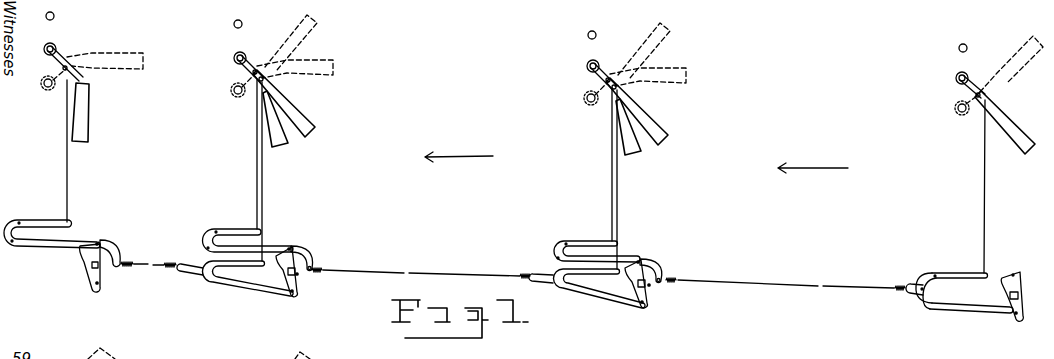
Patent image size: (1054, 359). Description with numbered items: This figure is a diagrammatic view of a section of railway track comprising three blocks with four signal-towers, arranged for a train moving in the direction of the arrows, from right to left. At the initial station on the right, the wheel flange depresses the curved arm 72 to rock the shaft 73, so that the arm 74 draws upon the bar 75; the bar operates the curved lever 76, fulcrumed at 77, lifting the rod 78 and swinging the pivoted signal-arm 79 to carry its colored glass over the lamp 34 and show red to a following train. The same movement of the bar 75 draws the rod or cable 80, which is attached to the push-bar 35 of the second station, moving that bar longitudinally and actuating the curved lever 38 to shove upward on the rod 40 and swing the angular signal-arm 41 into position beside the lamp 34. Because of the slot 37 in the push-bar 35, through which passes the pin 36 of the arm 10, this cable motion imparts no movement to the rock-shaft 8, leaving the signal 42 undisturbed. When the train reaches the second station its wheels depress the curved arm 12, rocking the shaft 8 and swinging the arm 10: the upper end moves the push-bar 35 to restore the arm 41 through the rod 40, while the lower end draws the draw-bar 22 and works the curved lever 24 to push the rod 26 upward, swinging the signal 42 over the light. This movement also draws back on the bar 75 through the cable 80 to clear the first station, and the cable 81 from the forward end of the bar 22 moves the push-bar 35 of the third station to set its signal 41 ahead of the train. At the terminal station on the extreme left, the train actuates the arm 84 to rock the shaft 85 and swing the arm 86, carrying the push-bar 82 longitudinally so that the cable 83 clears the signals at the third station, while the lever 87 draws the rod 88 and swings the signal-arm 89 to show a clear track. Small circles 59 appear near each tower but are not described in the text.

The rock-shaft 8 is at (652, 285).
The arm 10 is at (648, 299).
The curved arm 12 is at (454, 277).
The draw-bar 22 is at (595, 298).
The curved lever 24 is at (411, 276).
The vertically-reciprocatory rod 26 is at (622, 187).
The signal-lamp 34 is at (961, 113).
The push-bar 35 is at (663, 264).
The pin 36 is at (642, 259).
The slot 37 is at (637, 259).
The curved lever 38 is at (575, 241).
The vertical rod 40 is at (418, 160).
The angular signal-arm 41 is at (628, 128).
The signal-boards 42 is at (663, 135).
The lamp 59 is at (958, 47).
The curved depressible arm 72 is at (1003, 277).
The rock-shaft 73 is at (1011, 300).
The arm 74 is at (1018, 316).
The bar 75 is at (957, 305).
The curved lever 76 is at (955, 272).
The fulcrum 77 is at (931, 275).
The rod 78 is at (985, 205).
The signal-arm 79 is at (999, 112).
The rod or cable 80 is at (800, 279).
The cable 81 is at (426, 266).
The push-bar 82 is at (99, 243).
The cable 83 is at (148, 257).
The arm 84 is at (88, 252).
The shaft 85 is at (91, 267).
The arm 86 is at (101, 281).
The lever 87 is at (38, 224).
The rod 88 is at (67, 153).
The signal-arm 89 is at (82, 78).